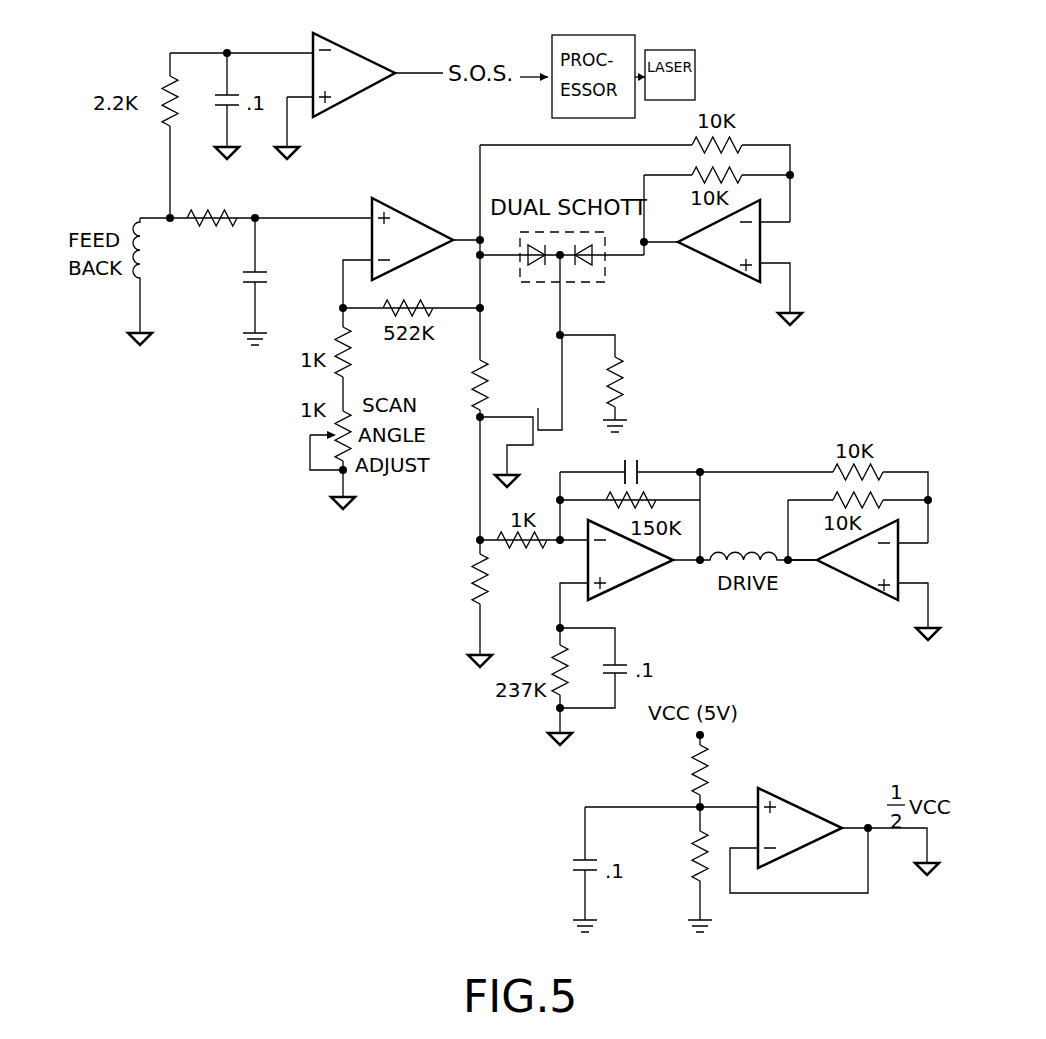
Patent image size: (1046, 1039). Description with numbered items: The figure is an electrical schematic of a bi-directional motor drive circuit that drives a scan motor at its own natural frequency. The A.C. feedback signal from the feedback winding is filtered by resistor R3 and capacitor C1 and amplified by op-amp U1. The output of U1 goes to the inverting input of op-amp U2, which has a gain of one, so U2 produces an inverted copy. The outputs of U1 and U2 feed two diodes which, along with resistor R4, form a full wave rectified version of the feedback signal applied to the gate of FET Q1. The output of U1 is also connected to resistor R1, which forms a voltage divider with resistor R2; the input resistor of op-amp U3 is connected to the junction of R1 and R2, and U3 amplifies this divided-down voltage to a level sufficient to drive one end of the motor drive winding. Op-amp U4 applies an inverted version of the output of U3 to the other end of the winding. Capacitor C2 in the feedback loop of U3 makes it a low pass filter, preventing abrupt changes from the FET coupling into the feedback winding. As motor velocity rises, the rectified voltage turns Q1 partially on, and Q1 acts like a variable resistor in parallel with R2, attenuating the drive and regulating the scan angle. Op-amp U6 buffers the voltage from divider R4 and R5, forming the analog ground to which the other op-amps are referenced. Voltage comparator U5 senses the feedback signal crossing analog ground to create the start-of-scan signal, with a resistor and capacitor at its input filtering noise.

The resistor R1 is at (494, 384).
The resistor R2 is at (482, 610).
The resistor R3 is at (212, 219).
The resistor R4 is at (675, 581).
The resistor R5 is at (489, 671).
The capacitor C1 is at (277, 281).
The capacitor C2 is at (657, 473).
The op-amp U1 is at (411, 253).
The op-amp U2 is at (723, 262).
The op-amp U3 is at (630, 574).
The op-amp U4 is at (864, 580).
The voltage comparator U5 is at (365, 75).
The op-amp U6 is at (834, 840).
The FET Q1 is at (548, 411).